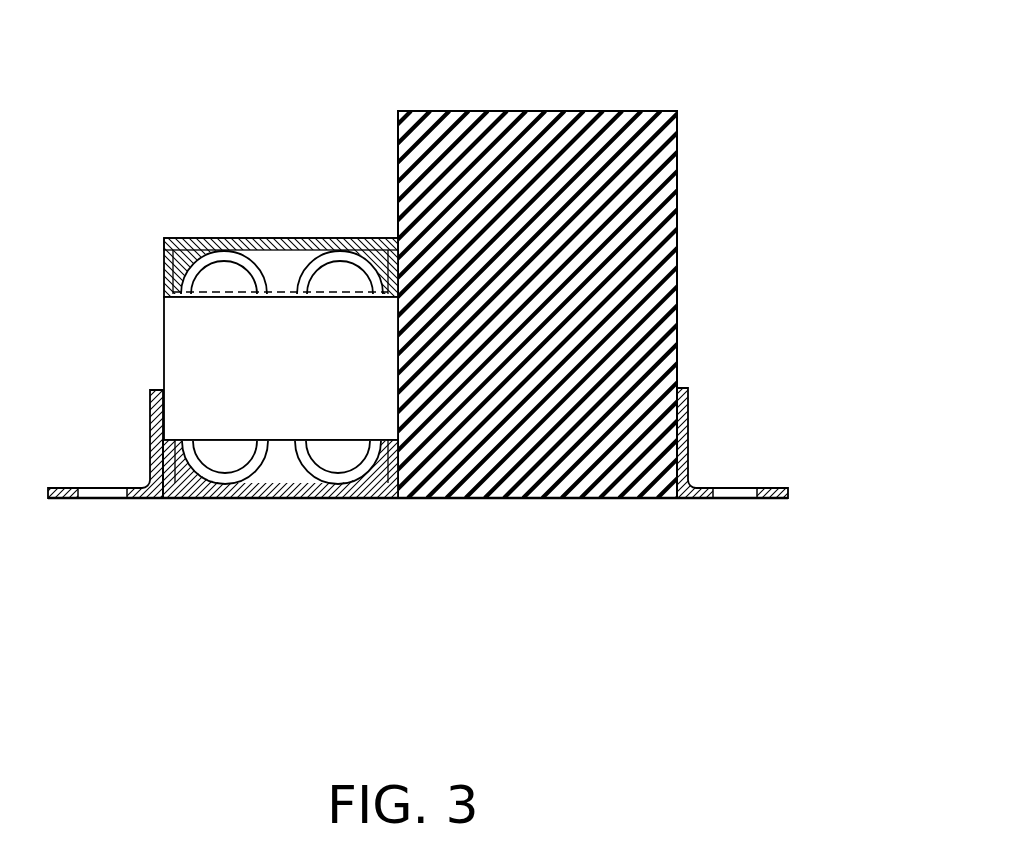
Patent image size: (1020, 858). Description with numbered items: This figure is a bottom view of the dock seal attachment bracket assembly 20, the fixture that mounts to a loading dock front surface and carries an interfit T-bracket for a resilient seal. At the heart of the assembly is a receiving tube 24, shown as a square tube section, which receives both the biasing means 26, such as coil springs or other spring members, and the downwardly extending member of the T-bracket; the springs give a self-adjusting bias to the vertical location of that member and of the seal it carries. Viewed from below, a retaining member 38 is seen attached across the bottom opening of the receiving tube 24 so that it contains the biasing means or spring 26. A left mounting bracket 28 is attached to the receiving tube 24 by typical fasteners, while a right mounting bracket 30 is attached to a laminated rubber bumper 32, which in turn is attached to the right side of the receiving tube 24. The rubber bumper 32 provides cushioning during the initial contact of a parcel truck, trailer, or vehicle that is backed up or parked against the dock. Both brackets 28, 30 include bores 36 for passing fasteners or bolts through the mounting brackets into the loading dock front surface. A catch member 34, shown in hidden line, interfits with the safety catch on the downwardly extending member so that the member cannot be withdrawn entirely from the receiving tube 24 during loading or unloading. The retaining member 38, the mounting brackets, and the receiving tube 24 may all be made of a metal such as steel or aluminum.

The attachment bracket assembly 20 is at (740, 267).
The receiving tube 24 is at (216, 215).
The biasing means 26 is at (338, 478).
The left mounting bracket 28 is at (67, 487).
The right mounting bracket 30 is at (687, 437).
The laminated rubber bumper 32 is at (678, 142).
The catch member 34 is at (191, 236).
The bores 36 is at (88, 500).
The retaining member 38 is at (192, 348).